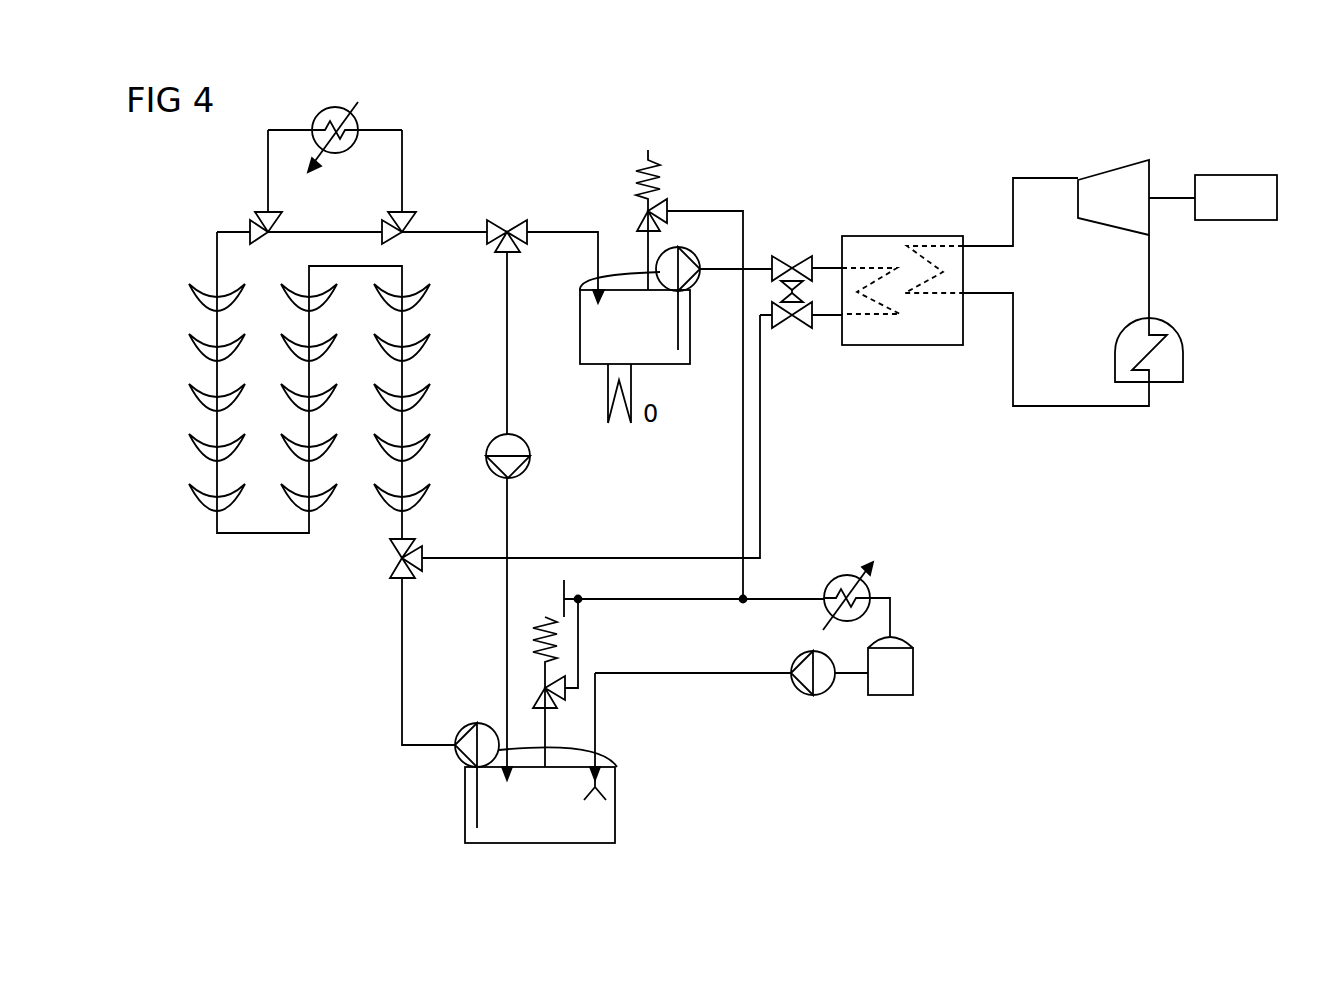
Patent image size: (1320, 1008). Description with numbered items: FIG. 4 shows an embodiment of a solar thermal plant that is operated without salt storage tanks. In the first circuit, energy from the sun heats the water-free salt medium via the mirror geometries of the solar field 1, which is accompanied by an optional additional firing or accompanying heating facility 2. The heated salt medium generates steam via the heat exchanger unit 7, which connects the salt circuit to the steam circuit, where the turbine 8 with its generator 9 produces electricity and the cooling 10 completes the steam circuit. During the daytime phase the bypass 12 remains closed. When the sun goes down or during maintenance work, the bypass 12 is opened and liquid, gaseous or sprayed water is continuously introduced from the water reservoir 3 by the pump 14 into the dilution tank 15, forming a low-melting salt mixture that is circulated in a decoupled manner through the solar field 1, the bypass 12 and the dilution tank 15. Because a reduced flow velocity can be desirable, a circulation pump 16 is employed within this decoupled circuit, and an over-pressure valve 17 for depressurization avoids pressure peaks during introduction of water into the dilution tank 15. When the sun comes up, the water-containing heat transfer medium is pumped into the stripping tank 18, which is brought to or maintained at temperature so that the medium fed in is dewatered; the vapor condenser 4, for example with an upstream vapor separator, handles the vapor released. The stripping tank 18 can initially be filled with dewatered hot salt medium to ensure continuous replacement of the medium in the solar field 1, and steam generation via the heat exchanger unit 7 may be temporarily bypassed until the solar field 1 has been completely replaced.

The solar field 1 is at (271, 367).
The additional firing/accompanying heating facility 2 is at (313, 117).
The water reservoir 3 is at (913, 672).
The vapor condenser 4 is at (827, 585).
The heat exchanger unit 7 is at (882, 236).
The turbine 8 is at (1110, 165).
The generator 9 is at (1235, 175).
The cooling 10 is at (1183, 360).
The bypass 12 is at (505, 284).
The pump 14 is at (815, 697).
The dilution tank 15 is at (617, 823).
The circulation pump 16 is at (490, 437).
The over-pressure valve 17 is at (618, 172).
The stripping tank 18 is at (682, 366).